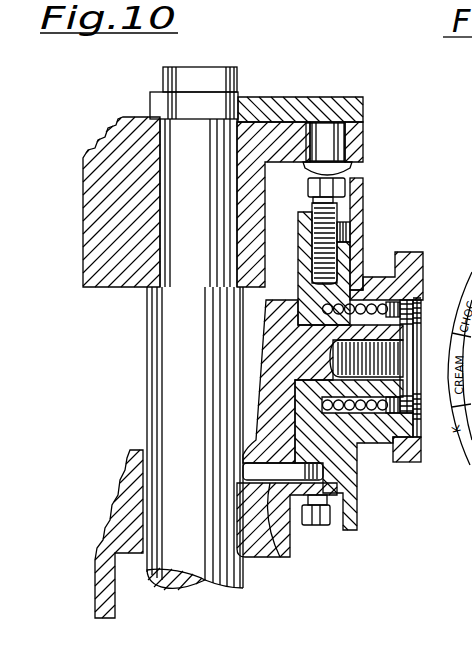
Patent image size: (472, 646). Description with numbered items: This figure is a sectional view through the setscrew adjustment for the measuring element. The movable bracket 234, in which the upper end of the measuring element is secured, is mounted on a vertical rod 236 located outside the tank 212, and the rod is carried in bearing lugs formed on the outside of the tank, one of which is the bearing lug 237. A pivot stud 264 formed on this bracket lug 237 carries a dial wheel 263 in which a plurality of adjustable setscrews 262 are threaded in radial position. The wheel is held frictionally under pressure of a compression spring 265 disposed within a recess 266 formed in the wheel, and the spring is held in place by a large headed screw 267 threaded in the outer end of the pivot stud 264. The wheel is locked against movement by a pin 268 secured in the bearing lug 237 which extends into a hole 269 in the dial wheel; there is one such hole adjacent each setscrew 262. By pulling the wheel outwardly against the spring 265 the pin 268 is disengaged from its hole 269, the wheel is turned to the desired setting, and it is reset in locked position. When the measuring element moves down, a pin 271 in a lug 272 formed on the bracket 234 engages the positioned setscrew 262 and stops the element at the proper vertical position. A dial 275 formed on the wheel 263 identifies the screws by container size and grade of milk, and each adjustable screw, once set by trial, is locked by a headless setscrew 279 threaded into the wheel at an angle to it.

The movable bracket 234 is at (252, 130).
The vertical rod 236 is at (175, 347).
The tank 212 is at (105, 577).
The bearing lug 237 is at (253, 547).
The pin 268 is at (280, 557).
The hole 269 is at (327, 495).
The pin 271 is at (330, 147).
The lug 272 is at (353, 135).
The adjustable setscrew 262 is at (327, 178).
The dial 275 is at (363, 191).
The headless setscrew 279 is at (352, 230).
The dial wheel 263 is at (347, 257).
The pivot stud 264 is at (283, 323).
The compression spring 265 is at (368, 415).
The recess 266 is at (378, 423).
The large headed screw 267 is at (419, 388).